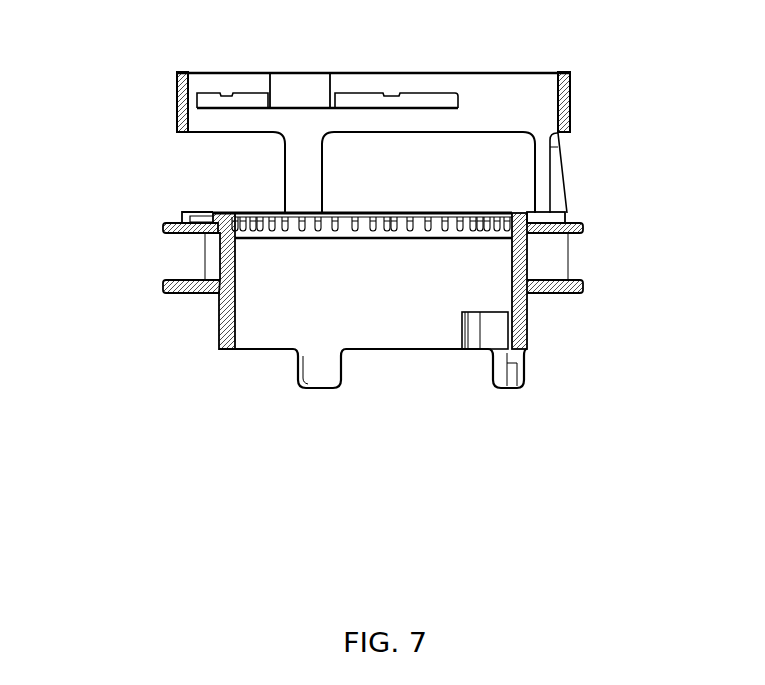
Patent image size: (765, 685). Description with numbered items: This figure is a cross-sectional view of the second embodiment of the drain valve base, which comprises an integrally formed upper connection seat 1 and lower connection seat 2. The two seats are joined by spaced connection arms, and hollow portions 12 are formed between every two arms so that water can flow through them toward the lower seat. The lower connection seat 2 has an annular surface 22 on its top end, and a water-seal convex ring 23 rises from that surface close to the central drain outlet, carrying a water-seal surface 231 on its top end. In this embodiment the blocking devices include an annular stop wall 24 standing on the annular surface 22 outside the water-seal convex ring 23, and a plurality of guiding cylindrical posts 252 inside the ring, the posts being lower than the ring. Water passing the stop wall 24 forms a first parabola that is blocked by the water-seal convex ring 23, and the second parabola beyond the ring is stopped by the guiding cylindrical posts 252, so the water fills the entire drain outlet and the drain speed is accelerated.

The upper connection seat 1 is at (543, 105).
The hollow portion 12 is at (503, 168).
The lower connection seat 2 is at (530, 318).
The annular surface 22 is at (163, 228).
The water-seal convex ring 23 is at (213, 212).
The water-seal surface 231 is at (217, 210).
The annular stop wall 24 is at (180, 212).
The guiding cylindrical post 252 is at (580, 233).